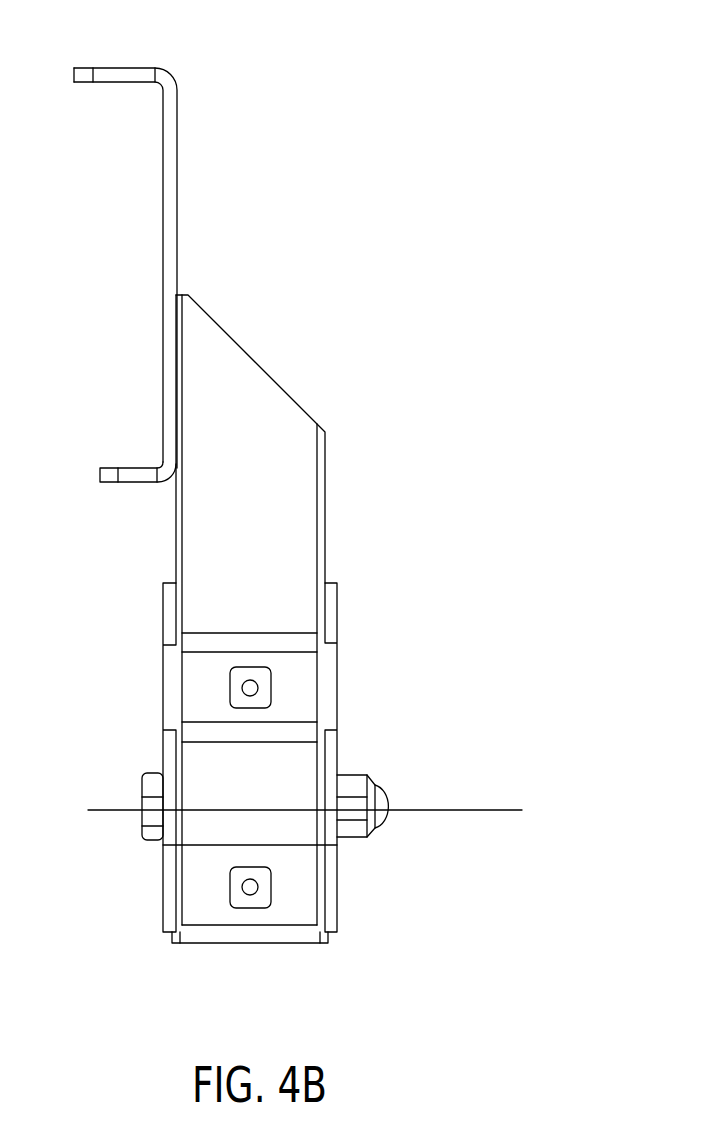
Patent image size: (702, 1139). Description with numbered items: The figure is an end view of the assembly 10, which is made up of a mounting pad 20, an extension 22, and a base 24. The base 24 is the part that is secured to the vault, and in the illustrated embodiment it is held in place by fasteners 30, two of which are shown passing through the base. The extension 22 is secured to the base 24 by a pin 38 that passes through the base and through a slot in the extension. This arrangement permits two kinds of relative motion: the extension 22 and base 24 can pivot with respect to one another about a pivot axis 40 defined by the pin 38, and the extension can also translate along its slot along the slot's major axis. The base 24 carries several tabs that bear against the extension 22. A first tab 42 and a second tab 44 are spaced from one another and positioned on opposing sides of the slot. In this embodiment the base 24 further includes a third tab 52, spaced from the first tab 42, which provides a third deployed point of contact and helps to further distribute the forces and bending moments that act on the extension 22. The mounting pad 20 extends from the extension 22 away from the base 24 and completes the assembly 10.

The assembly 10 is at (247, 80).
The mounting pad 20 is at (163, 185).
The extension 22 is at (260, 433).
The base 24 is at (172, 882).
The fasteners 30 is at (250, 688).
The pin 38 is at (360, 778).
The pivot axis 40 is at (482, 820).
The first tab 42 is at (292, 732).
The second tab 44 is at (330, 942).
The third tab 52 is at (282, 643).